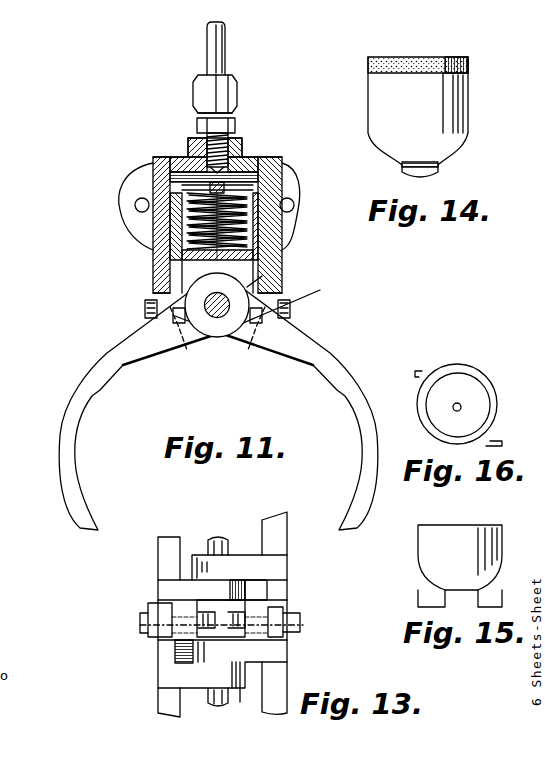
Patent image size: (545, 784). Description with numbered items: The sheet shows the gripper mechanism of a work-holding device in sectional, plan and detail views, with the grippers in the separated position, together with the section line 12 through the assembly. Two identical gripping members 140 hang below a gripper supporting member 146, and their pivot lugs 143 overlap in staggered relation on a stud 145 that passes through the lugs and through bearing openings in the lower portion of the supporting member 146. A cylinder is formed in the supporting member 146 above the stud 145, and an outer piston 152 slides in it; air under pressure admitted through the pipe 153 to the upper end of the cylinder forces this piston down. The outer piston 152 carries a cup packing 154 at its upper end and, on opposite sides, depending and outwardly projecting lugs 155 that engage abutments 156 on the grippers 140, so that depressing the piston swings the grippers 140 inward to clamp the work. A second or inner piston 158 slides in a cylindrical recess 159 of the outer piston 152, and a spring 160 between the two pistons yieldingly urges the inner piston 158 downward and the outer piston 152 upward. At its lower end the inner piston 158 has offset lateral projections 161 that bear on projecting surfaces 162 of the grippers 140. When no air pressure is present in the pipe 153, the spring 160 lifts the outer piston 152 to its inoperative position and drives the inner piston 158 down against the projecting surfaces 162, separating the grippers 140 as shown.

In FIG. 11, the section line 12 is at (160, 222).
In FIG. 11, the gripping member 140 is at (333, 362).
In FIG. 13, the gripping member 140 is at (168, 552).
In FIG. 13, the pivot lug 143 is at (198, 562).
In FIG. 11, the stud 145 is at (224, 317).
In FIG. 13, the stud 145 is at (230, 540).
In FIG. 11, the gripper supporting member 146 is at (295, 230).
In FIG. 11, the outer piston 152 is at (280, 255).
In FIG. 14, the outer piston 152 is at (453, 111).
In FIG. 11, the pipe 153 is at (225, 45).
In FIG. 11, the cup packing 154 is at (250, 160).
In FIG. 14, the cup packing 154 is at (413, 63).
In FIG. 11, the lug 155 is at (153, 290).
In FIG. 14, the lug 155 is at (422, 170).
In FIG. 11, the abutment 156 is at (150, 300).
In FIG. 11, the inner piston 158 is at (183, 247).
In FIG. 16, the inner piston 158 is at (482, 380).
In FIG. 15, the inner piston 158 is at (465, 537).
In FIG. 11, the cylindrical recess 159 is at (178, 200).
In FIG. 11, the spring 160 is at (187, 220).
In FIG. 16, the offset lateral projection 161 is at (418, 370).
In FIG. 15, the offset lateral projection 161 is at (418, 598).
In FIG. 11, the projecting surface 162 is at (182, 338).
In FIG. 13, the projecting surface 162 is at (260, 591).